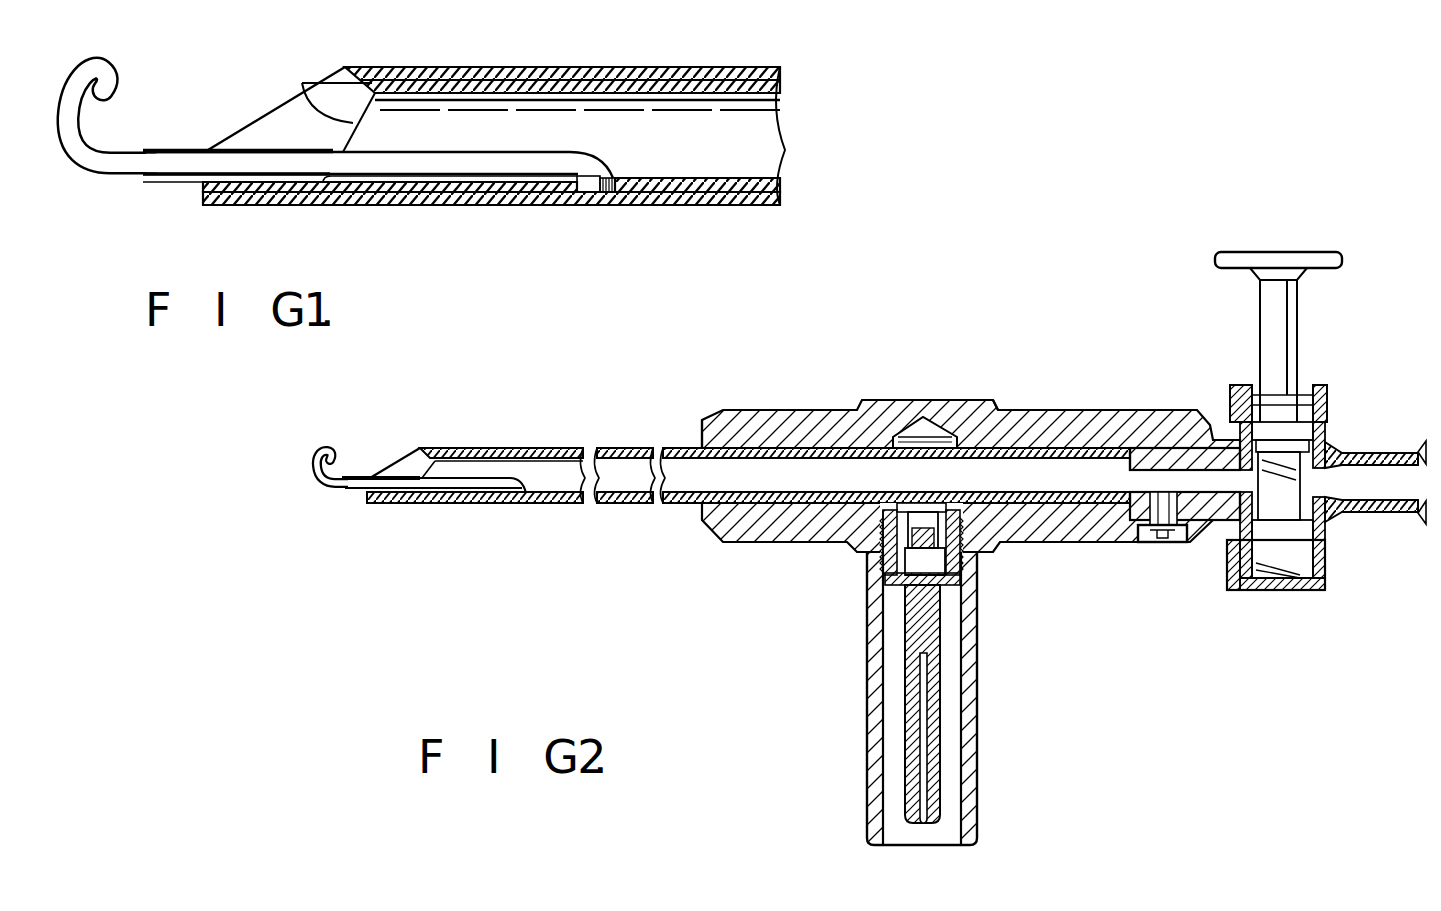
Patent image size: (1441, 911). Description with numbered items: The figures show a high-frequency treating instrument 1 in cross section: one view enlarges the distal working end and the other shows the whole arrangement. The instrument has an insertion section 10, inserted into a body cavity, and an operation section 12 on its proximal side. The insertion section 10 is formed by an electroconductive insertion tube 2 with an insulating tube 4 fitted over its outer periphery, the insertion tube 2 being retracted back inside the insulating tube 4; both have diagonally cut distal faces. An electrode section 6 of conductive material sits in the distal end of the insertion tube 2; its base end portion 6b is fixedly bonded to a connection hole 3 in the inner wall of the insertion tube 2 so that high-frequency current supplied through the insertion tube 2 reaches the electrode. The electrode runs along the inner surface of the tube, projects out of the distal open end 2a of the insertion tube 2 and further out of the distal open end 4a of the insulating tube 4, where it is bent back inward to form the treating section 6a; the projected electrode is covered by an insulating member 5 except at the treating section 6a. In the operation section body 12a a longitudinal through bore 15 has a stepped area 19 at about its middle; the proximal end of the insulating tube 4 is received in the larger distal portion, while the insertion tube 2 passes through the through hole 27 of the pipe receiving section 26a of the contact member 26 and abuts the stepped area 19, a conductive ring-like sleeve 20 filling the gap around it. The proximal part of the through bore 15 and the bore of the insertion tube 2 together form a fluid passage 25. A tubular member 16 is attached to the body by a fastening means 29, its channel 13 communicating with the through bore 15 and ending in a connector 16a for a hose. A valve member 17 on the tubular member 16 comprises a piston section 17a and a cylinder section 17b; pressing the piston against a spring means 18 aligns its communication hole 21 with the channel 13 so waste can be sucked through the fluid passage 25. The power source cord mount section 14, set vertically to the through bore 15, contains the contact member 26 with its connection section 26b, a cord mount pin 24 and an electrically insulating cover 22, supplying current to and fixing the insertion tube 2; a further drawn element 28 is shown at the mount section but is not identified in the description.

In FIG. 1, the high-frequency treating instrument 1 is at (510, 55).
In FIG. 2, the high-frequency treating instrument 1 is at (811, 376).
In FIG. 1, the insertion tube 2 is at (665, 188).
In FIG. 2, the insertion tube 2 is at (551, 448).
In FIG. 1, the distal open end of insertion tube 2a is at (353, 123).
In FIG. 1, the connection hole 3 is at (618, 180).
In FIG. 1, the insulating tube 4 is at (585, 68).
In FIG. 2, the insulating tube 4 is at (513, 448).
In FIG. 1, the distal open end of insulating tube 4a is at (258, 118).
In FIG. 2, the distal open end of insulating tube 4a is at (402, 463).
In FIG. 1, the insulating member 5 is at (185, 150).
In FIG. 2, the insulating member 5 is at (352, 490).
In FIG. 1, the electrode section 6 is at (357, 170).
In FIG. 2, the electrode section 6 is at (436, 489).
In FIG. 1, the treating section 6a is at (98, 86).
In FIG. 2, the treating section 6a is at (310, 458).
In FIG. 1, the base end portion of electrode section 6b is at (585, 168).
In FIG. 1, the insertion section 10 is at (503, 213).
In FIG. 2, the insertion section 10 is at (603, 442).
In FIG. 2, the operation section 12 is at (1100, 392).
In FIG. 2, the operation section body 12a is at (1056, 545).
In FIG. 2, the channel 13 is at (1225, 487).
In FIG. 2, the power source cord mount section 14 is at (1003, 680).
In FIG. 2, the through bore 15 is at (750, 458).
In FIG. 2, the tubular member 16 is at (1330, 447).
In FIG. 2, the connector 16a is at (1388, 510).
In FIG. 2, the valve member 17 is at (1310, 330).
In FIG. 2, the piston section 17a is at (1268, 335).
In FIG. 2, the cylinder section 17b is at (1312, 528).
In FIG. 2, the spring means 18 is at (1275, 593).
In FIG. 2, the stepped area 19 is at (1020, 455).
In FIG. 2, the ring-like sleeve 20 is at (850, 448).
In FIG. 2, the communication hole 21 is at (1240, 397).
In FIG. 2, the electrically insulating cover 22 is at (975, 746).
In FIG. 2, the cord mount pin 24 is at (940, 804).
In FIG. 1, the fluid passage 25 is at (710, 112).
In FIG. 2, the fluid passage 25 is at (1112, 487).
In FIG. 2, the contact member 26 is at (912, 428).
In FIG. 2, the pipe receiving section 26a is at (935, 445).
In FIG. 2, the connection section 26b is at (960, 575).
In FIG. 2, the through hole 27 is at (998, 458).
In FIG. 2, the threads 28 is at (880, 565).
In FIG. 2, the fastening means 29 is at (1160, 522).